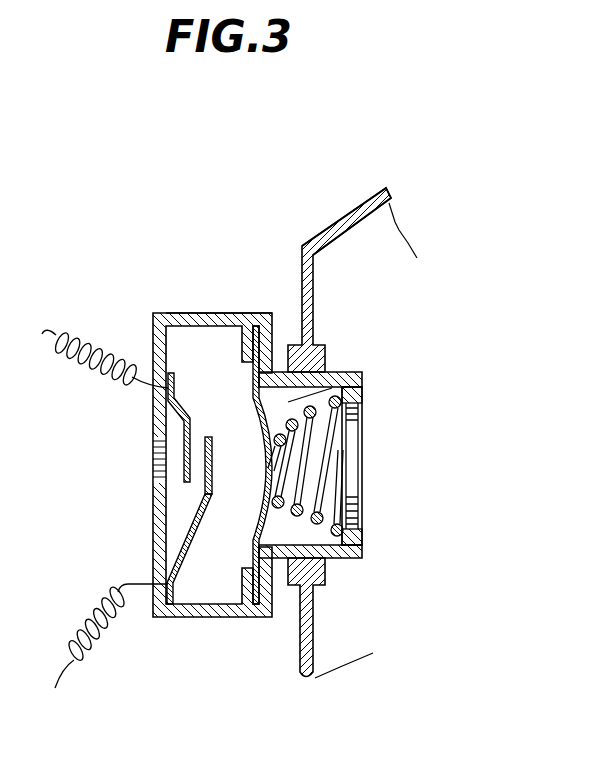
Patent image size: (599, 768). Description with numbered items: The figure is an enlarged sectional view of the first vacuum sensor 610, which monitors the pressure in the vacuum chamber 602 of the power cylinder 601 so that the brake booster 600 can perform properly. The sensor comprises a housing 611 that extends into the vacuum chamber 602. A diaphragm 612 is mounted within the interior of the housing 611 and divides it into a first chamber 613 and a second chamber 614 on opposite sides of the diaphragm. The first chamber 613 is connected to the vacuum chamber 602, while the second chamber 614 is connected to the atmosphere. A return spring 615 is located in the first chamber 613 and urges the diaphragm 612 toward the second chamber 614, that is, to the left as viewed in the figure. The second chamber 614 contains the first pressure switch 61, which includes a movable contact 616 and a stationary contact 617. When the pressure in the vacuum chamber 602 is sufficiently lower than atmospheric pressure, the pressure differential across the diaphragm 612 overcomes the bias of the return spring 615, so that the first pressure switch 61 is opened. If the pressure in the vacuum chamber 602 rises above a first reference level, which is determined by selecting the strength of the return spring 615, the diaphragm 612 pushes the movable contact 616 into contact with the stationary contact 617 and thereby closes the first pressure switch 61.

The brake booster 600 is at (352, 205).
The power cylinder 601 is at (300, 662).
The vacuum chamber 602 is at (364, 257).
The first pressure switch 61 is at (197, 533).
The first vacuum sensor 610 is at (212, 478).
The housing 611 is at (234, 313).
The diaphragm 612 is at (264, 513).
The first chamber 613 is at (349, 460).
The second chamber 614 is at (230, 368).
The return spring 615 is at (346, 518).
The movable contact 616 is at (213, 462).
The stationary contact 617 is at (160, 433).